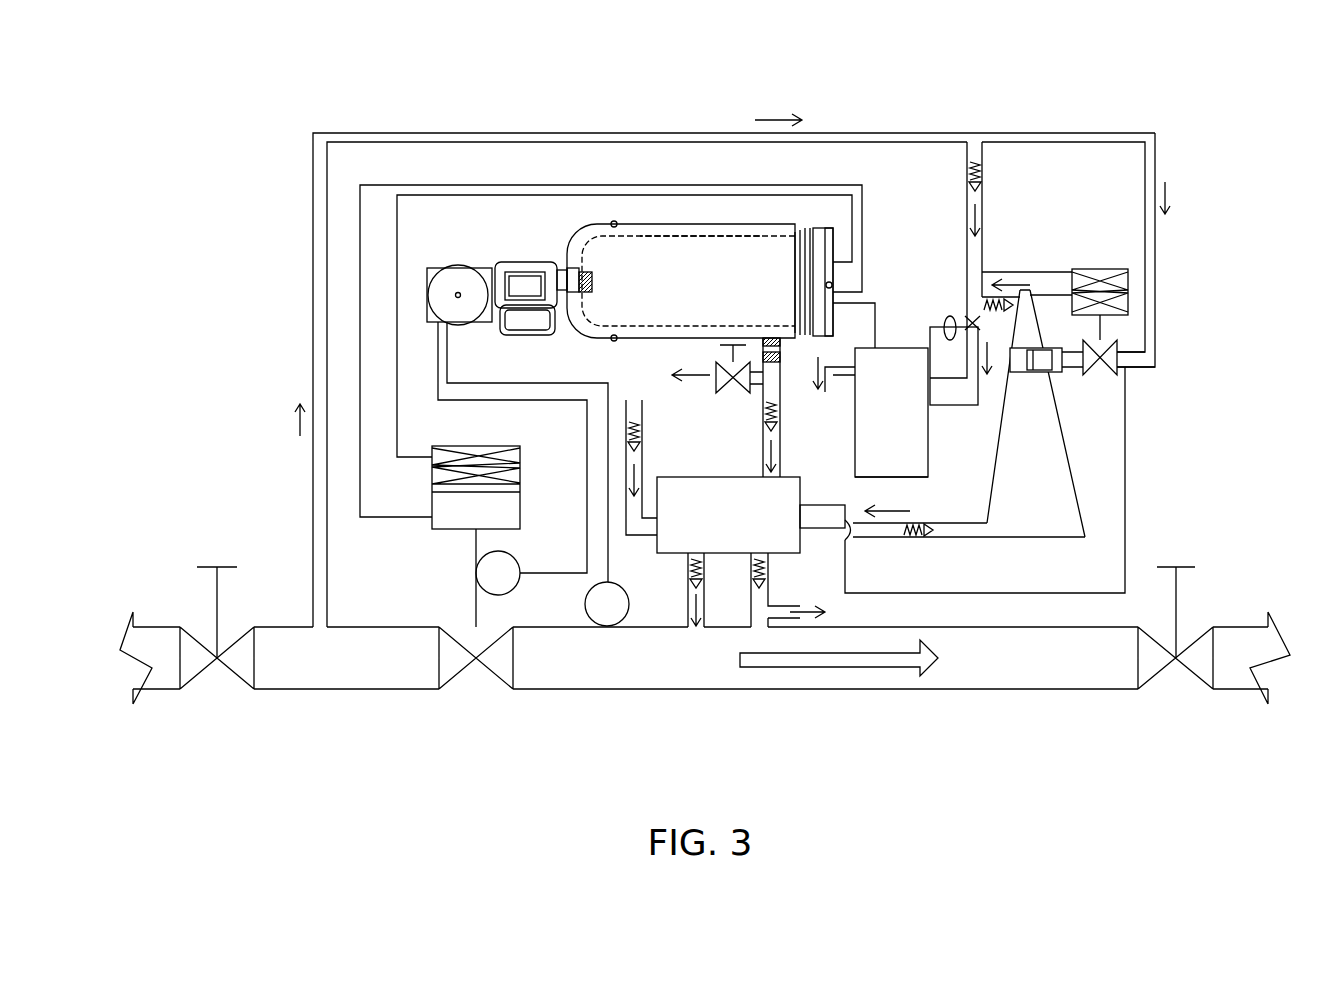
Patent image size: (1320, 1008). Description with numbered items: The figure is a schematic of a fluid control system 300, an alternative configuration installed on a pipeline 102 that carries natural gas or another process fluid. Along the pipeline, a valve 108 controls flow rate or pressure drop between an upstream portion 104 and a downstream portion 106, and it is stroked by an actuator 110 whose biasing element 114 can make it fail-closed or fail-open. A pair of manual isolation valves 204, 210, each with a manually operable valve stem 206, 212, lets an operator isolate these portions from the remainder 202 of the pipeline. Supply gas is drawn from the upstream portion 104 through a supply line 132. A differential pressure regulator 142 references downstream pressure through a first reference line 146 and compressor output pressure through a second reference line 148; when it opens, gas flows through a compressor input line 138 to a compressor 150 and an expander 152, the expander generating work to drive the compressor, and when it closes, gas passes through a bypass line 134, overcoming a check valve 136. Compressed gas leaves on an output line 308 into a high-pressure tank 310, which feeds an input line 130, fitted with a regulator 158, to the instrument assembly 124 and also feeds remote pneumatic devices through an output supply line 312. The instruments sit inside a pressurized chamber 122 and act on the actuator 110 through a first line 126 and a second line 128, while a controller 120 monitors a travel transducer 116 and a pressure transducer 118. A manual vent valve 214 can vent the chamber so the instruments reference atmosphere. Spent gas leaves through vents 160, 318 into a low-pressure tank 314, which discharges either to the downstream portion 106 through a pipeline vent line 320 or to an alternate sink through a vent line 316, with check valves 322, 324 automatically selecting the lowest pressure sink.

The fluid control system 300 is at (301, 107).
The pipeline 102 is at (706, 666).
The upstream portion 104 is at (358, 690).
The downstream portion 106 is at (832, 690).
The valve 108 is at (483, 668).
The actuator 110 is at (447, 529).
The biasing element 114 is at (475, 446).
The travel transducer 116 is at (520, 558).
The pressure transducer 118 is at (585, 598).
The controller 120 is at (498, 256).
The pressurized chamber 122 is at (643, 263).
The instrument assembly 124 is at (695, 240).
The first line 126 is at (395, 517).
The second line 128 is at (410, 457).
The input line 130 is at (876, 325).
The supply line 132 is at (312, 378).
The bypass line 134 is at (976, 234).
The check valve 136 is at (985, 163).
The compressor input line 138 is at (1163, 178).
The differential pressure regulator 142 is at (1100, 269).
The first reference line 146 is at (1128, 478).
The second reference line 148 is at (1007, 272).
The compressor 150 is at (1030, 325).
The expander 152 is at (988, 512).
The regulator 158 is at (955, 312).
The vent 160 is at (783, 410).
The remainder 202 is at (170, 690).
The isolation valve 204 is at (195, 658).
The valve stem 206 is at (215, 605).
The isolation valve 210 is at (1202, 658).
The valve stem 212 is at (1178, 605).
The manual vent valve 214 is at (712, 372).
The output line 308 is at (940, 418).
The high-pressure tank 310 is at (892, 480).
The output supply line 312 is at (830, 392).
The low-pressure tank 314 is at (728, 550).
The vent line 316 is at (765, 613).
The vent 318 is at (642, 448).
The pipeline vent line 320 is at (659, 614).
The check valve 322 is at (688, 560).
The check valve 324 is at (768, 565).